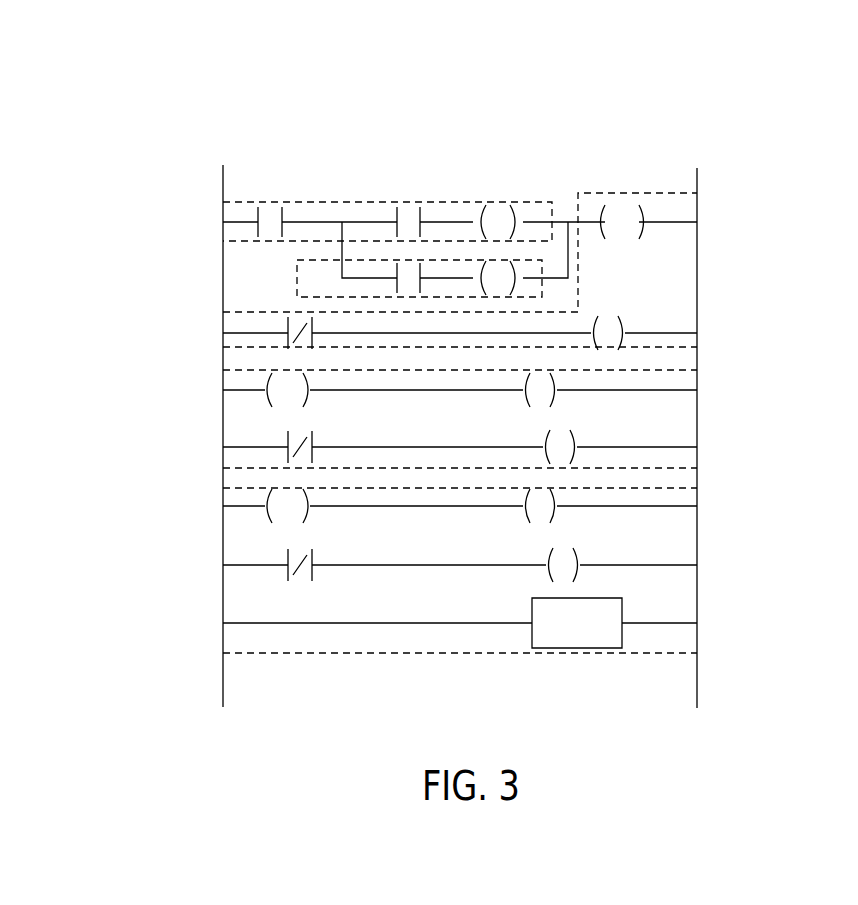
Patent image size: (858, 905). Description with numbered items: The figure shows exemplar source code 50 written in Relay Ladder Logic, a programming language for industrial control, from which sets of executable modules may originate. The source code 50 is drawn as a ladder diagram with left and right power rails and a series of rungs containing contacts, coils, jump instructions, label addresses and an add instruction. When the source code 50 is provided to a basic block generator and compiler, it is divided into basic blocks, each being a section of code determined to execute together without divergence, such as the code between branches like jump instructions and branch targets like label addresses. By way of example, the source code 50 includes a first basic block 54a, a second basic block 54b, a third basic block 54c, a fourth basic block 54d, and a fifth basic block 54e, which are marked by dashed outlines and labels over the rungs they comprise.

The source code 50 is at (466, 382).
The basic block 54a is at (345, 178).
The basic block 54b is at (274, 278).
The basic block 54c is at (172, 336).
The basic block 54d is at (762, 412).
The basic block 54e is at (762, 526).